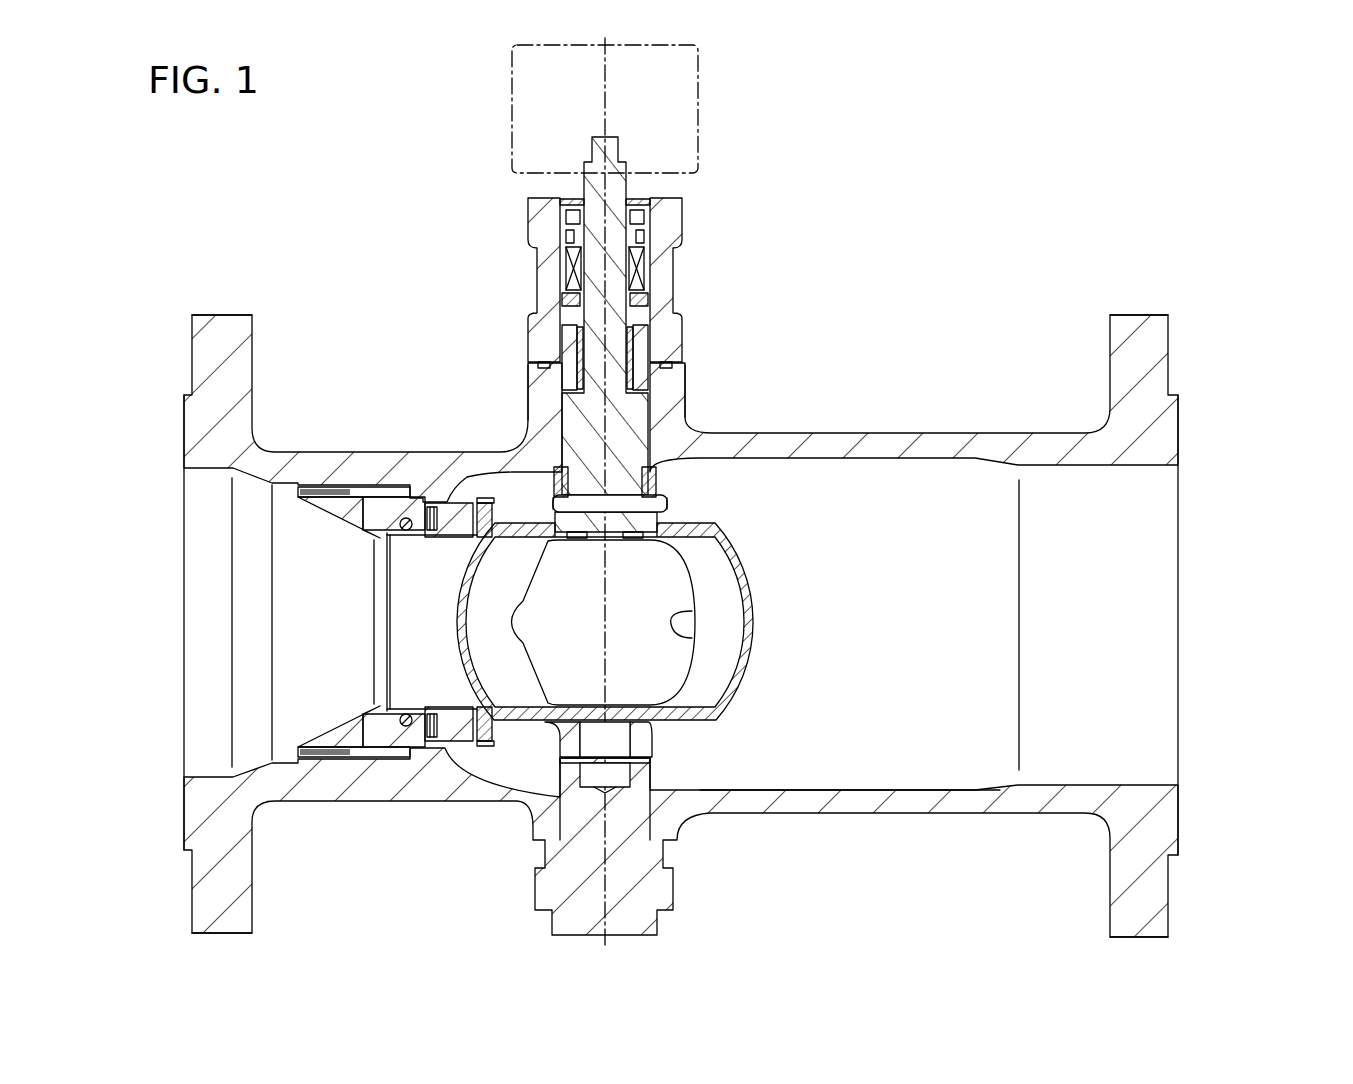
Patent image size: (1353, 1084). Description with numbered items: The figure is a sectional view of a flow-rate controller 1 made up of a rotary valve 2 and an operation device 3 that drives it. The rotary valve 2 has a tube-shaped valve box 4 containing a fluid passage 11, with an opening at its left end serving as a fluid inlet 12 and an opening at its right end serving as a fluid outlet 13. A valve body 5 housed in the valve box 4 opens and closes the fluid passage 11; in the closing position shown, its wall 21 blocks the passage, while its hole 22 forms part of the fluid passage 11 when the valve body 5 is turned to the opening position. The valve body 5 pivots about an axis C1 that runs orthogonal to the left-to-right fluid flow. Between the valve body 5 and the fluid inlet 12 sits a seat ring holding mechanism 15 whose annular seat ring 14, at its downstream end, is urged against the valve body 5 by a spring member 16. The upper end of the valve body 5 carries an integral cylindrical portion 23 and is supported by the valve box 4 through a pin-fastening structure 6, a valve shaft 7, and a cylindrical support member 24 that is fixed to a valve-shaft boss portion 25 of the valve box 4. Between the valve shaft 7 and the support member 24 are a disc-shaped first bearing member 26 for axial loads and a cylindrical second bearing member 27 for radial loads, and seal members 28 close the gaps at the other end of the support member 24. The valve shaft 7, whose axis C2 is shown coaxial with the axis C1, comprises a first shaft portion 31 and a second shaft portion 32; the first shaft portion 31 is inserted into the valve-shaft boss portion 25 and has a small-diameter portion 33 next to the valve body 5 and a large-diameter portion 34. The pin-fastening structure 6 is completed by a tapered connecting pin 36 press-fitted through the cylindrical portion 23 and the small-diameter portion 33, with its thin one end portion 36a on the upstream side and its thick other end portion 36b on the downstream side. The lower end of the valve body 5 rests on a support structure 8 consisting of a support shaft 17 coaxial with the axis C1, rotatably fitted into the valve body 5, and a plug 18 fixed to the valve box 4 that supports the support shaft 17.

The flow-rate controller 1 is at (1240, 121).
The rotary valve 2 is at (686, 598).
The operation device 3 is at (707, 90).
The valve box 4 is at (1000, 430).
The valve body 5 is at (643, 621).
The pin-fastening structure 6 is at (682, 370).
The valve shaft 7 is at (700, 393).
The support structure 8 is at (681, 708).
The fluid passage 11 is at (878, 758).
The fluid inlet 12 is at (192, 585).
The fluid outlet 13 is at (1176, 585).
The seat ring 14 is at (480, 746).
The seat ring holding mechanism 15 is at (386, 764).
The spring member 16 is at (405, 736).
The support shaft 17 is at (620, 738).
The plug 18 is at (660, 896).
The wall 21 is at (458, 636).
The hole 22 is at (680, 630).
The cylindrical portion 23 is at (556, 490).
The support member 24 is at (530, 262).
The valve-shaft boss portion 25 is at (534, 398).
The first bearing member 26 is at (538, 350).
The second bearing member 27 is at (560, 322).
The seal members 28 is at (575, 238).
The first shaft portion 31 is at (686, 412).
The second shaft portion 32 is at (650, 323).
The small-diameter portion 33 is at (656, 468).
The large-diameter portion 34 is at (638, 380).
The connecting pin 36 is at (634, 549).
The one end portion 36a is at (552, 500).
The other end portion 36b is at (663, 510).
The axis C1 is at (605, 663).
The axis C2 is at (612, 125).